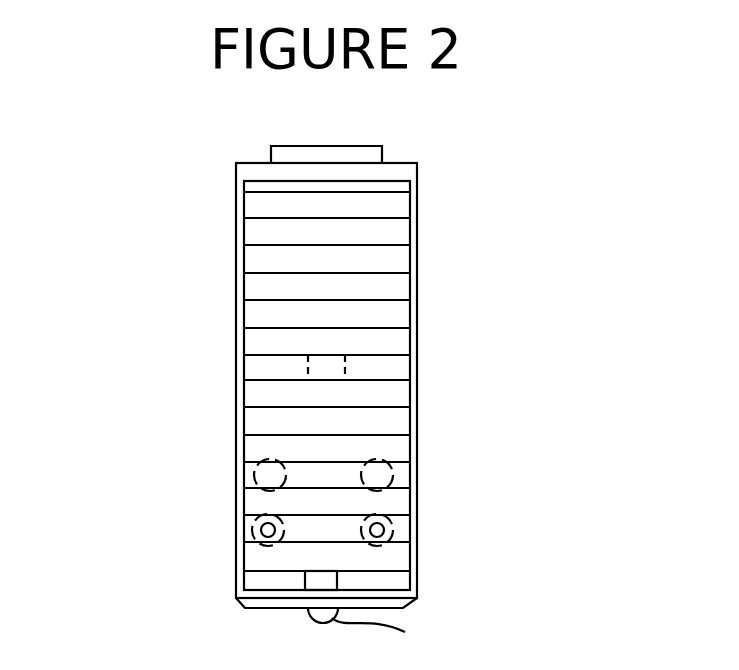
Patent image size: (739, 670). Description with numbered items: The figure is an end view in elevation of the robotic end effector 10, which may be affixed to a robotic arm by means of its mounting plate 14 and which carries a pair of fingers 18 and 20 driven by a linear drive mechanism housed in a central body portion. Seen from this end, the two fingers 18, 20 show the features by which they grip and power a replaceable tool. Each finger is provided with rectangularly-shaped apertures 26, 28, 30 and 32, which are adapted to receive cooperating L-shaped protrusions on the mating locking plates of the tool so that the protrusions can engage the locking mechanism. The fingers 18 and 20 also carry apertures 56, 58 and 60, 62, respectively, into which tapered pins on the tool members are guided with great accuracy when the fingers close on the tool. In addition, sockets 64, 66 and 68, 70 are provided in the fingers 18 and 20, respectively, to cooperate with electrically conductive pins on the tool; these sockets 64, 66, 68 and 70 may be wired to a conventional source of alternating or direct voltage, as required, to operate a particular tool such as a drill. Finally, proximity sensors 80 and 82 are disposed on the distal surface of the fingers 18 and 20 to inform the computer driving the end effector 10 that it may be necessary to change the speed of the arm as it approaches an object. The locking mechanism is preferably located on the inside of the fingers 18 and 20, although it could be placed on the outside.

The end effector 10 is at (417, 226).
The mounting plate 14 is at (352, 153).
The finger 20 is at (377, 332).
The finger 18 is at (384, 342).
The rectangularly-shaped aperture 30 is at (221, 360).
The rectangularly-shaped aperture 26 is at (327, 367).
The aperture 60 is at (169, 474).
The aperture 56 is at (265, 477).
The aperture 62 is at (451, 469).
The aperture 58 is at (395, 468).
The socket 64 is at (168, 546).
The socket 68 is at (255, 536).
The socket 66 is at (441, 530).
The socket 70 is at (395, 531).
The rectangularly-shaped aperture 32 is at (441, 584).
The rectangularly-shaped aperture 28 is at (318, 581).
The proximity sensor 80 is at (372, 635).
The proximity sensor 82 is at (372, 635).